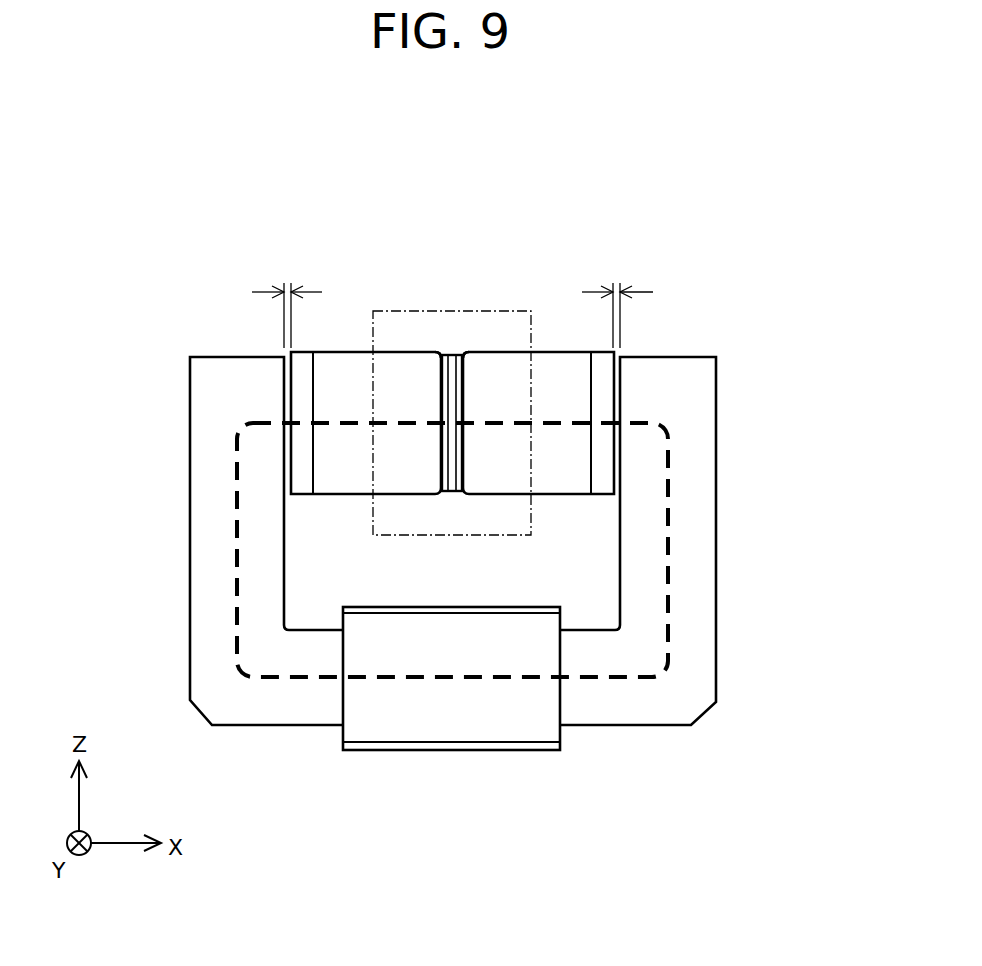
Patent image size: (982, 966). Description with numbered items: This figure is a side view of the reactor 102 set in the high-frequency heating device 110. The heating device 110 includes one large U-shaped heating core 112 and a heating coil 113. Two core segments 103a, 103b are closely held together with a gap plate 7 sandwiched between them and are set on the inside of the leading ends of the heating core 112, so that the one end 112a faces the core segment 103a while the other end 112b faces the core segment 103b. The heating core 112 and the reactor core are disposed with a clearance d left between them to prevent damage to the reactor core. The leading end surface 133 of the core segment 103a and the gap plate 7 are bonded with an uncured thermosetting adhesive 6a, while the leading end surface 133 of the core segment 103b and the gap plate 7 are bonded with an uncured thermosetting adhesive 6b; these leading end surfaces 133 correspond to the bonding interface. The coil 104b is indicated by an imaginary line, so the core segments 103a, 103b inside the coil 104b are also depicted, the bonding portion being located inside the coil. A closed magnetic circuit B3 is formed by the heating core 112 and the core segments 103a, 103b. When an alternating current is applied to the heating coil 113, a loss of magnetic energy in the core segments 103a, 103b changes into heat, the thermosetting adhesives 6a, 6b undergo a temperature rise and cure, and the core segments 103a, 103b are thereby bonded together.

The reactor 102 is at (380, 189).
The core segment 103a is at (345, 365).
The core segment 103b is at (558, 363).
The gap plate 7 is at (455, 353).
The thermosetting adhesive 6a is at (443, 349).
The thermosetting adhesive 6b is at (461, 349).
The leading end surface 133 is at (436, 388).
The clearance d is at (452, 300).
The one end of heating core 112a is at (202, 392).
The other end of heating core 112b is at (705, 393).
The heating core 112 is at (313, 713).
The heating coil 113 is at (405, 725).
The high-frequency heating device 110 is at (415, 803).
The coil 104b is at (373, 516).
The closed magnetic circuit B3 is at (670, 550).